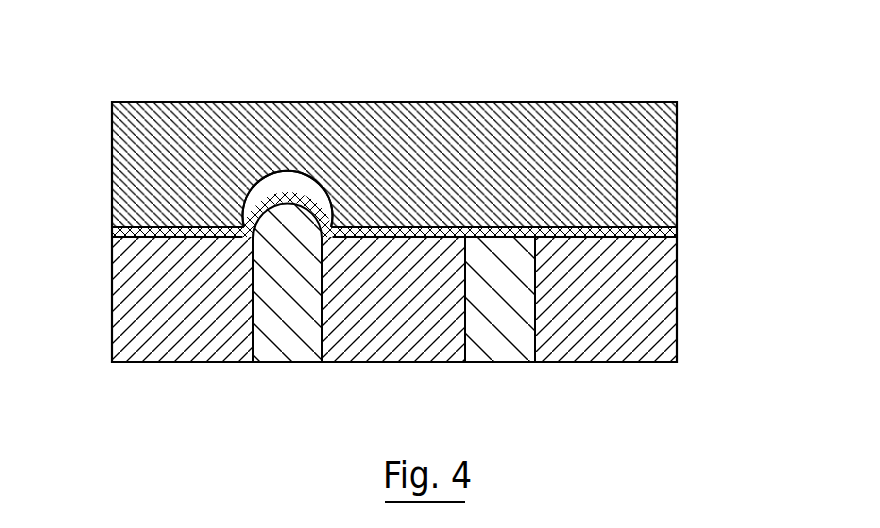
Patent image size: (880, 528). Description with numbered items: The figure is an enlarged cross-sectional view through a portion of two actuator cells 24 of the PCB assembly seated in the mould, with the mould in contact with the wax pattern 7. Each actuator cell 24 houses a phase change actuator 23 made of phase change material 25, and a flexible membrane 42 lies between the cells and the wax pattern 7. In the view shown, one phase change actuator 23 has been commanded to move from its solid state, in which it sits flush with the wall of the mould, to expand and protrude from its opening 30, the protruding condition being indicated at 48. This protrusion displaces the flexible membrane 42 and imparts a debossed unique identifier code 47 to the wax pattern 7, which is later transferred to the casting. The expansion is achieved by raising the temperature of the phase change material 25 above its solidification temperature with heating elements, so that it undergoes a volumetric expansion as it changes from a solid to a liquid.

The wax pattern 7 is at (540, 133).
The phase change actuator 23 is at (280, 193).
The actuator cell 24 is at (515, 298).
The phase change material 25 is at (272, 365).
The opening 30 is at (252, 238).
The flexible membrane 42 is at (653, 232).
The debossed unique identifier code 47 is at (300, 194).
The protrusion of the phase change actuator 48 is at (250, 208).